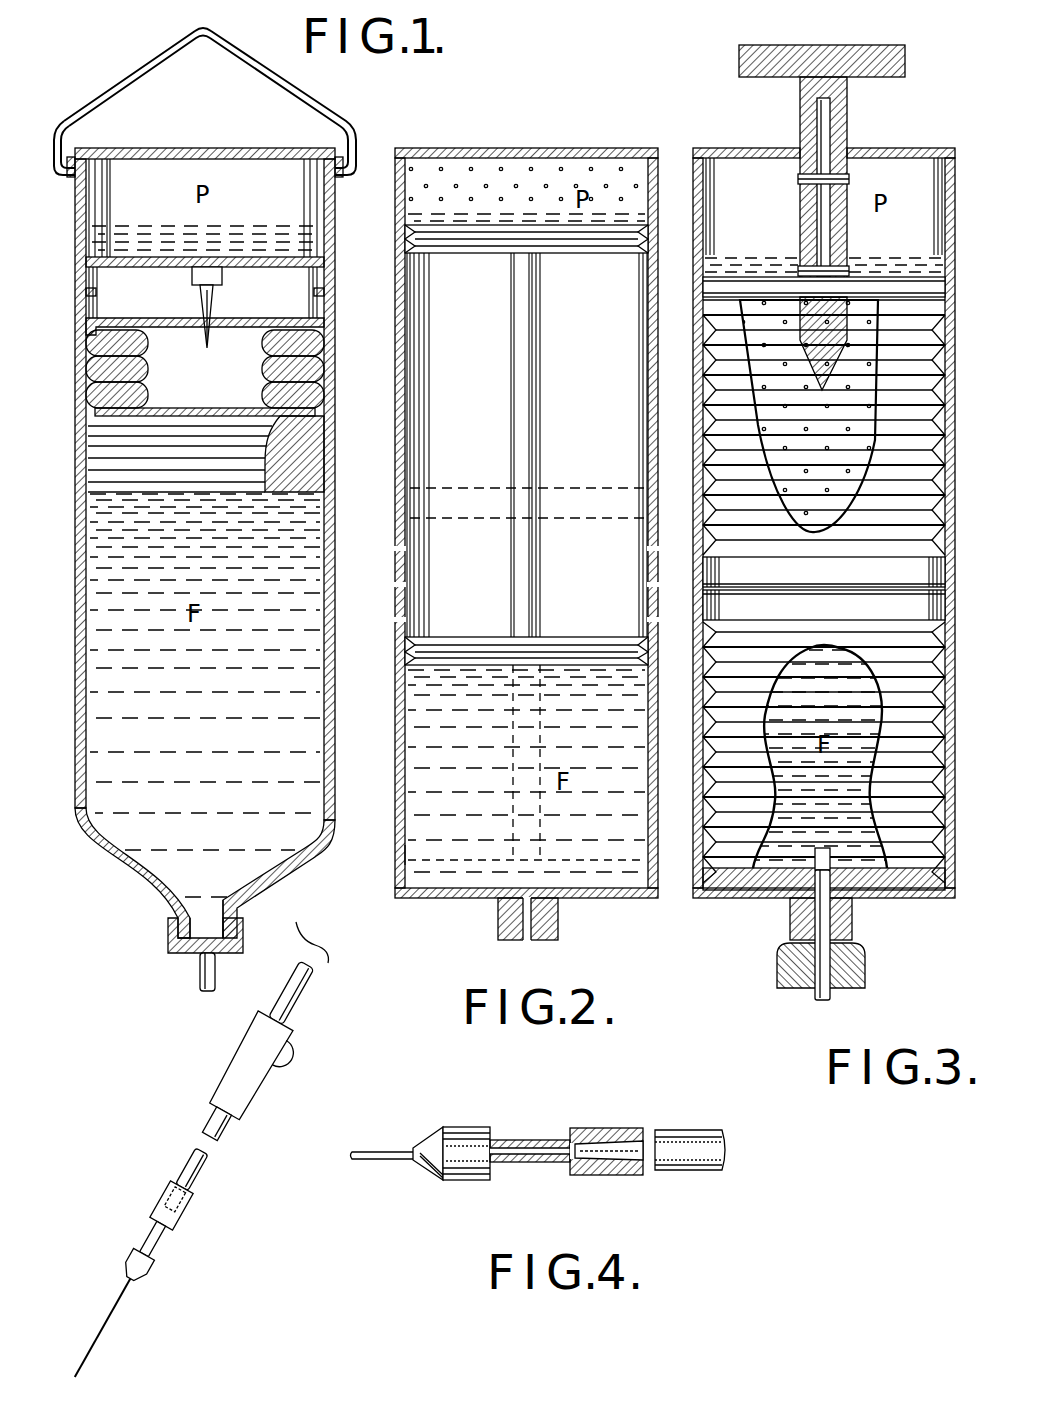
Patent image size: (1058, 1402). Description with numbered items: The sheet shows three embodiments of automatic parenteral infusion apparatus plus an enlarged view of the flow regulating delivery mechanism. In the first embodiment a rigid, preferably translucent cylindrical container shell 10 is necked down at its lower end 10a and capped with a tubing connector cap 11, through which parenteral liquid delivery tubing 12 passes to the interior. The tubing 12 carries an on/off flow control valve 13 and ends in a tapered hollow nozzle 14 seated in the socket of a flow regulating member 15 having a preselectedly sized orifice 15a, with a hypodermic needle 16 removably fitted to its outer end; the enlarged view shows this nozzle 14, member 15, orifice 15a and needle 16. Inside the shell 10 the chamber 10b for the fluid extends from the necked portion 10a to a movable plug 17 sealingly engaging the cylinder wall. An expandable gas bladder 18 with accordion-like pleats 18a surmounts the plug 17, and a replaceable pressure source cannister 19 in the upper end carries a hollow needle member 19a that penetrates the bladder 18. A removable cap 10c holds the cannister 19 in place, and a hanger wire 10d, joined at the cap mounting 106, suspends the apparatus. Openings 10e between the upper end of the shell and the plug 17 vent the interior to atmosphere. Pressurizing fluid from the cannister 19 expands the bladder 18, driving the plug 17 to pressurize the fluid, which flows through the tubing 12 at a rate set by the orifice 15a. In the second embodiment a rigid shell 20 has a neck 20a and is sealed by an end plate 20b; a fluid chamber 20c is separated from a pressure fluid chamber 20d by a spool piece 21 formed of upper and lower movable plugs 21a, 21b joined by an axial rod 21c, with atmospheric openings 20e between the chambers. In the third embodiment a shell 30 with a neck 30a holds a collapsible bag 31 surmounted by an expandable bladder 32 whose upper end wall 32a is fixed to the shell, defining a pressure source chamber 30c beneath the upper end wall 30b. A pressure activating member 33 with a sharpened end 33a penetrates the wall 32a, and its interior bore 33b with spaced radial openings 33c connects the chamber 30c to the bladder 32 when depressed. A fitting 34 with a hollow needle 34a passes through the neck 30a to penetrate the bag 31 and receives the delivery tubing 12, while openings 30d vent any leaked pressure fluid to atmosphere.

In FIG. 1, the container shell 10 is at (308, 852).
In FIG. 1, the necked down lower end 10a is at (177, 912).
In FIG. 1, the fluid chamber 10b is at (106, 808).
In FIG. 1, the removable cap 10c is at (236, 148).
In FIG. 1, the hanger wire 10d is at (152, 62).
In FIG. 1, the openings 10e is at (76, 253).
In FIG. 1, the handle mounting lug 106 is at (331, 197).
In FIG. 1, the tubing connector cap 11 is at (172, 953).
In FIG. 1, the parenteral liquid delivery tubing 12 is at (216, 980).
In FIG. 3, the parenteral liquid delivery tubing 12 is at (816, 995).
In FIG. 4, the parenteral liquid delivery tubing 12 is at (681, 1168).
In FIG. 1, the on/off flow control valve 13 is at (251, 1092).
In FIG. 1, the tapered hollow nozzle 14 is at (172, 1195).
In FIG. 4, the tapered hollow nozzle 14 is at (623, 1150).
In FIG. 1, the flow regulating member 15 is at (178, 1218).
In FIG. 4, the flow regulating member 15 is at (578, 1128).
In FIG. 4, the orifice 15a is at (550, 1163).
In FIG. 1, the hypodermic needle 16 is at (113, 1318).
In FIG. 4, the hypodermic needle 16 is at (429, 1172).
In FIG. 1, the movable plug 17 is at (96, 467).
In FIG. 1, the expandable gas bladder 18 is at (95, 316).
In FIG. 1, the accordion-like pleats 18a is at (76, 393).
In FIG. 1, the pressure source cannister 19 is at (279, 267).
In FIG. 1, the hollow needle member 19a is at (213, 306).
In FIG. 2, the cylindrical shell 20 is at (656, 895).
In FIG. 2, the neck 20a is at (497, 930).
In FIG. 2, the end plate 20b is at (590, 128).
In FIG. 2, the fluid chamber 20c is at (404, 853).
In FIG. 2, the pressure fluid chamber 20d is at (496, 166).
In FIG. 2, the openings 20e is at (401, 562).
In FIG. 2, the spool piece 21 is at (488, 292).
In FIG. 2, the upper movable plug 21a is at (608, 251).
In FIG. 2, the lower movable plug 21b is at (600, 639).
In FIG. 2, the axial rod 21c is at (540, 448).
In FIG. 3, the cylindrical shell 30 is at (697, 896).
In FIG. 3, the neck 30a is at (853, 925).
In FIG. 3, the upper end wall 30b is at (757, 151).
In FIG. 3, the pressure source chamber 30c is at (935, 151).
In FIG. 3, the openings 30d is at (700, 562).
In FIG. 3, the collapsible bag 31 is at (922, 850).
In FIG. 3, the expandable bladder 32 is at (797, 553).
In FIG. 3, the upper end wall 32a is at (758, 270).
In FIG. 3, the pressure activating member 33 is at (741, 77).
In FIG. 3, the sharpened end 33a is at (805, 399).
In FIG. 3, the interior bore 33b is at (836, 206).
In FIG. 3, the radial openings 33c is at (800, 181).
In FIG. 3, the fitting 34 is at (866, 978).
In FIG. 3, the hollow needle 34a is at (822, 849).